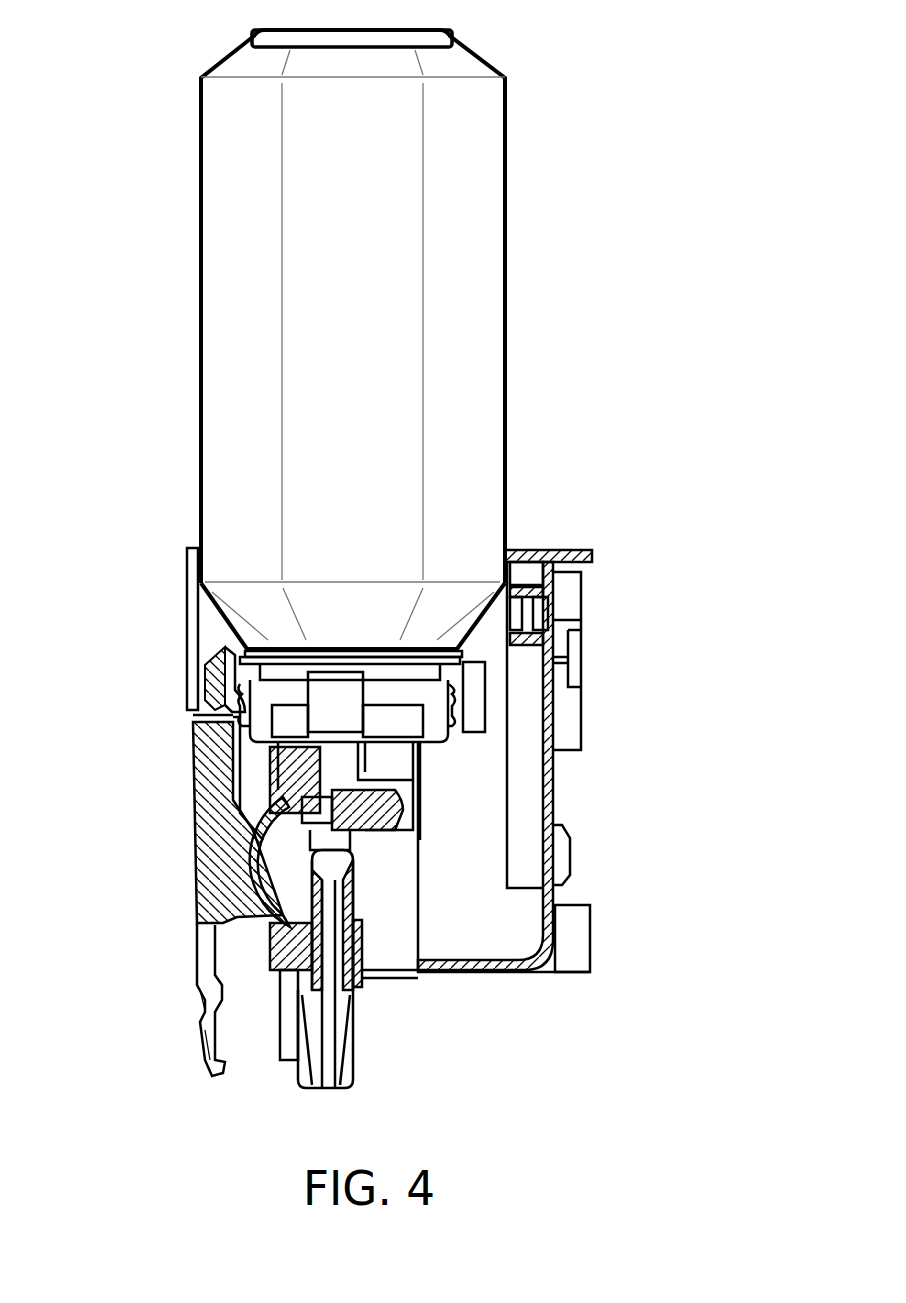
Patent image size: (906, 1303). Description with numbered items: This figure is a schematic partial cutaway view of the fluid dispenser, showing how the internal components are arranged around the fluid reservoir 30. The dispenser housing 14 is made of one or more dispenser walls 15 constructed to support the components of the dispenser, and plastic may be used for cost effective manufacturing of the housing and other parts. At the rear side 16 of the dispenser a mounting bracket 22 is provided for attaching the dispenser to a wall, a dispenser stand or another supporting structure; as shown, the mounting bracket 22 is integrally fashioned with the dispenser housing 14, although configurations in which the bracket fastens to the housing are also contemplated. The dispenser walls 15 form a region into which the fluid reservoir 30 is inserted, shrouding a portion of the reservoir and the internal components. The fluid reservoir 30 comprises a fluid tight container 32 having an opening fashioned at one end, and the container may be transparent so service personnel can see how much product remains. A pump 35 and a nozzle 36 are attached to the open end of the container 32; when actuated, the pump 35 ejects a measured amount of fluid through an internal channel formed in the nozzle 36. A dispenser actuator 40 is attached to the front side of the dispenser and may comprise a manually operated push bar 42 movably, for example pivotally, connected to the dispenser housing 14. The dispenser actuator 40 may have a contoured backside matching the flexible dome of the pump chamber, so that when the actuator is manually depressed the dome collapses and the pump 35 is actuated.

The dispenser housing 14 is at (186, 612).
The dispenser wall 15 is at (200, 668).
The rear side 16 is at (628, 461).
The mounting bracket 22 is at (518, 548).
The fluid reservoir 30 is at (230, 281).
The fluid tight container 32 is at (222, 218).
The pump 35 is at (290, 872).
The nozzle 36 is at (350, 1026).
The dispenser actuator 40 is at (193, 812).
The push bar 42 is at (218, 752).